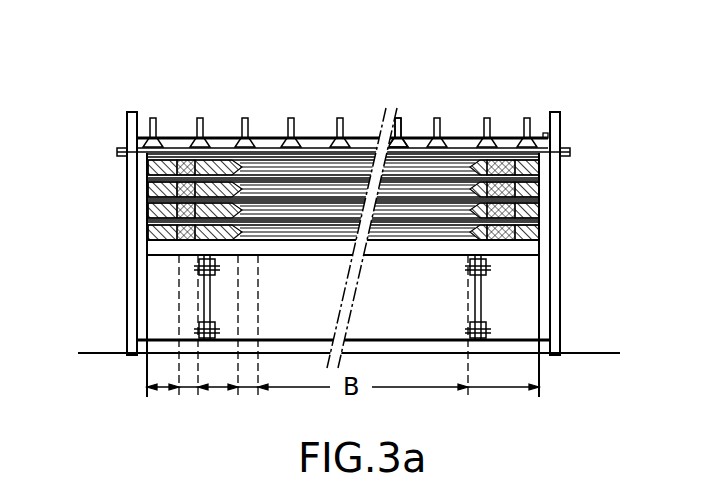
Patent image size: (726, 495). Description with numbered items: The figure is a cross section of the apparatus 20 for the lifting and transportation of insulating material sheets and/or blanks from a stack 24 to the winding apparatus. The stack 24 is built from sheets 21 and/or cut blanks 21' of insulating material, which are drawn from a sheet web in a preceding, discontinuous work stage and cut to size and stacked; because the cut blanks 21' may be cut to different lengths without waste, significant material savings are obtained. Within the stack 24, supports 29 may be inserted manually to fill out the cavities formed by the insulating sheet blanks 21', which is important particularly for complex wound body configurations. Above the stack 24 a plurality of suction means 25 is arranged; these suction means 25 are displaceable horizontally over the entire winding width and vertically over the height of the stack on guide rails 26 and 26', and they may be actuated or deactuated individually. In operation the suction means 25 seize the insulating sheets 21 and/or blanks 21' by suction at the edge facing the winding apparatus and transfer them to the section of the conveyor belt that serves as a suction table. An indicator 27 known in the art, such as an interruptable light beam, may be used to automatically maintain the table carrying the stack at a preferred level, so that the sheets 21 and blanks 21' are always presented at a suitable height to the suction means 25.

The apparatus for lifting and transportation 20 is at (498, 57).
The sheets 21 is at (297, 204).
The cut blanks 21' is at (343, 96).
The stack 24 is at (531, 187).
The suction means 25 is at (291, 117).
The guide rail 26 is at (395, 89).
The guide rail 26' is at (337, 254).
The indicator 27 is at (120, 150).
The supports 29 is at (530, 237).